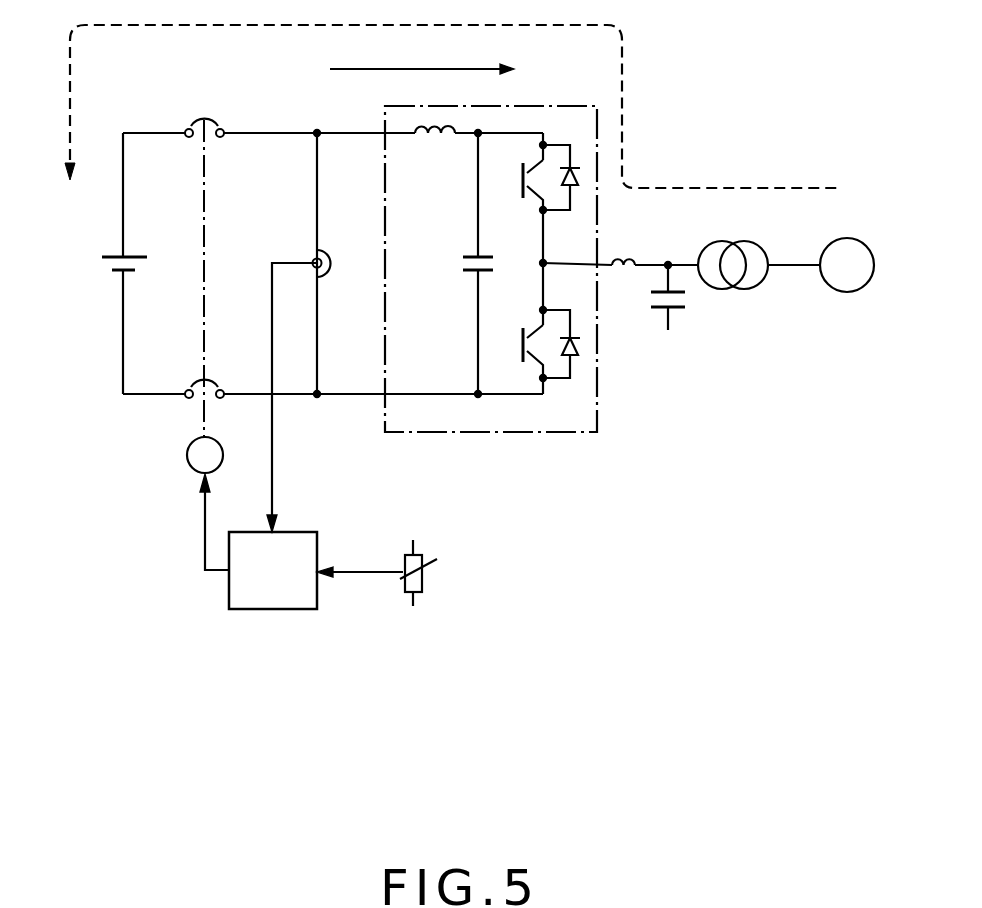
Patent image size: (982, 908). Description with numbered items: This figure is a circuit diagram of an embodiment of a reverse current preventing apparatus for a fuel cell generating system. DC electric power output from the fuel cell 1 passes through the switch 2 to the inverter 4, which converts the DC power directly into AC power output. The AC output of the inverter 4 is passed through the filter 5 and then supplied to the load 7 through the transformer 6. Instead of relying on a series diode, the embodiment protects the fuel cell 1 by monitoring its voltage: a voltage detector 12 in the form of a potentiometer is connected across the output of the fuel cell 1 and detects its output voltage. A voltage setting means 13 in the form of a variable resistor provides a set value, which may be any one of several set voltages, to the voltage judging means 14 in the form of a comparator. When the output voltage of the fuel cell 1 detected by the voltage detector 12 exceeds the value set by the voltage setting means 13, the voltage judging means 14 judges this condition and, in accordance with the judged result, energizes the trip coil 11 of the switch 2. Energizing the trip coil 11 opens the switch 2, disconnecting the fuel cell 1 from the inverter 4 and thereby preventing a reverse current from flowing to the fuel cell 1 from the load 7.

The fuel cell 1 is at (115, 262).
The switch 2 is at (204, 117).
The inverter 4 is at (530, 105).
The filter 5 is at (680, 250).
The transformer 6 is at (733, 289).
The load 7 is at (838, 292).
The trip coil 11 is at (187, 457).
The voltage detector 12 is at (317, 250).
The voltage setting means 13 is at (428, 577).
The voltage judging means 14 is at (272, 609).